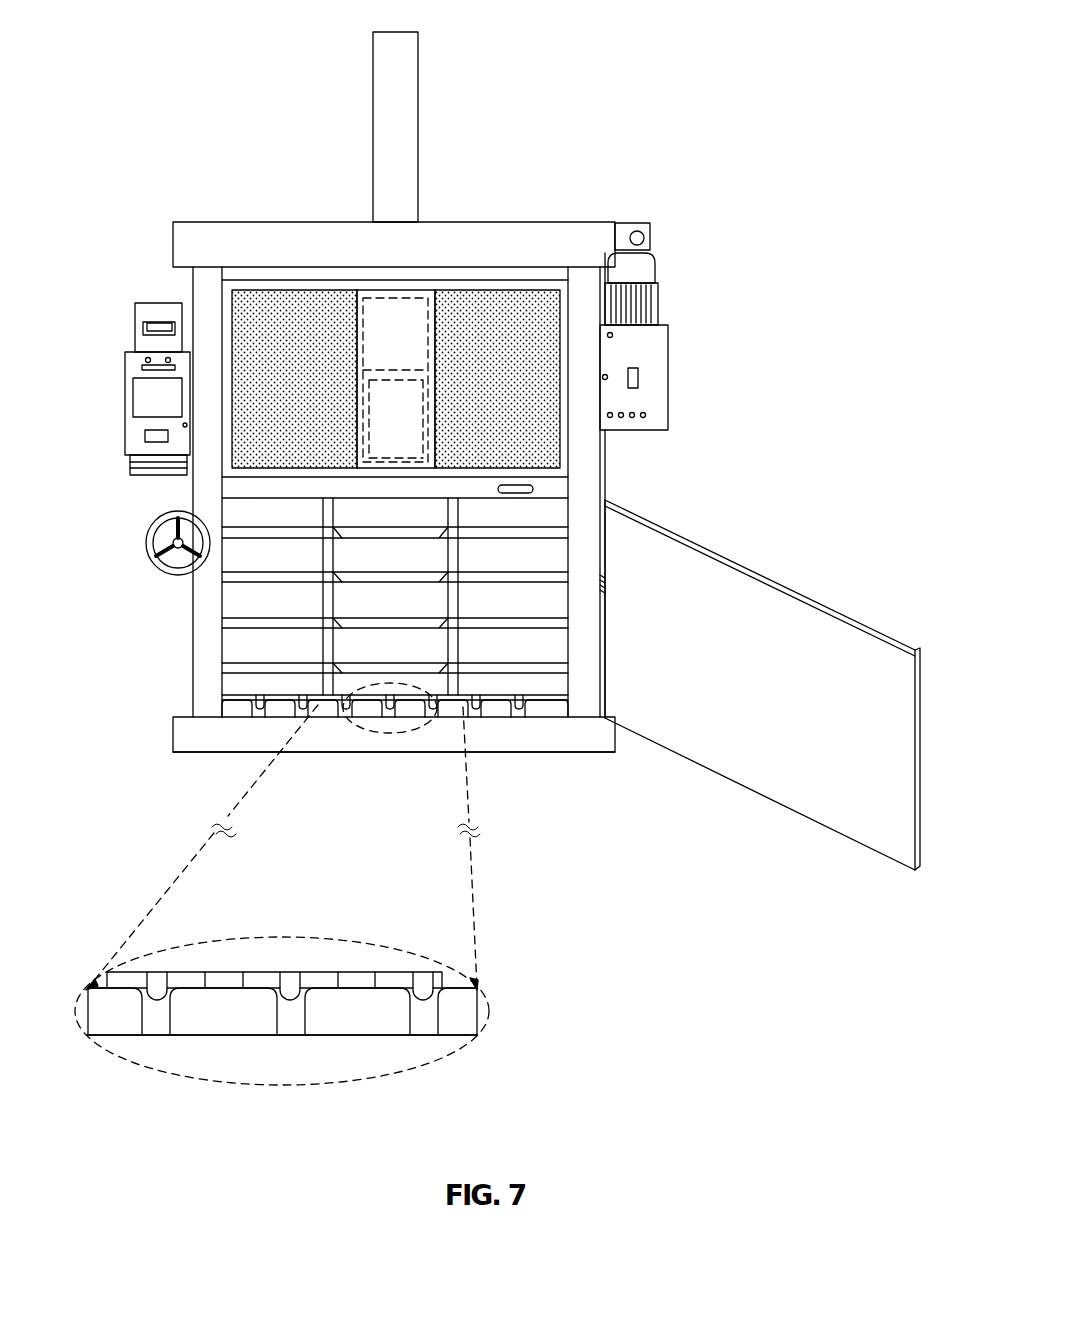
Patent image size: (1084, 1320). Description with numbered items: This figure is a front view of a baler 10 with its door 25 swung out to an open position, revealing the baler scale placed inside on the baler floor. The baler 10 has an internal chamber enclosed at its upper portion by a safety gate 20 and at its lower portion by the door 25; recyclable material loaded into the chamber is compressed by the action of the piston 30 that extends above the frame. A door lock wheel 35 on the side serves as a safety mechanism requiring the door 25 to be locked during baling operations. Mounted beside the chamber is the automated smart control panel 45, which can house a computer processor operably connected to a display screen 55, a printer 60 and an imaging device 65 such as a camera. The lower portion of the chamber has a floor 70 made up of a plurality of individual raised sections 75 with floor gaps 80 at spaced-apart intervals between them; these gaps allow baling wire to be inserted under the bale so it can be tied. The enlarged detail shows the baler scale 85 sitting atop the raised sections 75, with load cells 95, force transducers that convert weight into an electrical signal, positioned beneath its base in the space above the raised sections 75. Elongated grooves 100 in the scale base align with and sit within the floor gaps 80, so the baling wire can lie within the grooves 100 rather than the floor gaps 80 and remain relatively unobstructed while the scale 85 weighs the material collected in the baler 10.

The baler 10 is at (624, 111).
The safety gate 20 is at (275, 305).
The door 25 is at (797, 602).
The piston 30 is at (418, 90).
The door lock wheel 35 is at (177, 575).
The smart control panel 45 is at (125, 382).
The display screen 55 is at (145, 403).
The printer 60 is at (160, 303).
The imaging device 65 is at (650, 238).
The floor 70 is at (577, 742).
The individual raised sections 75 is at (223, 710).
The floor gaps 80 is at (293, 1023).
The baler scale 85 is at (260, 970).
The load cells 95 is at (360, 980).
The elongated grooves 100 is at (287, 990).